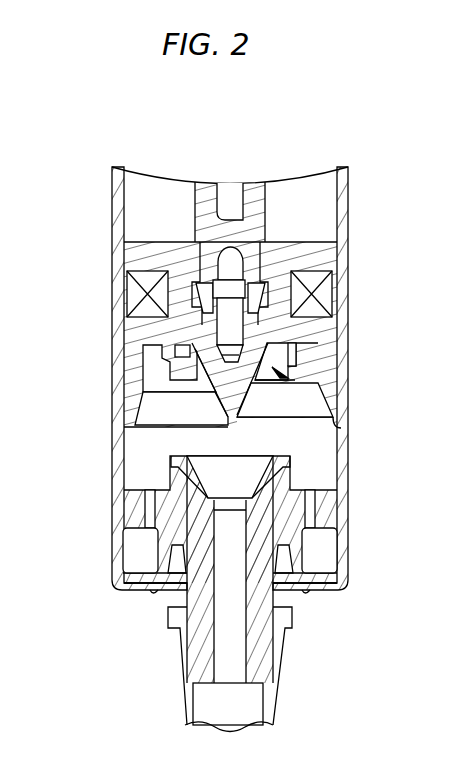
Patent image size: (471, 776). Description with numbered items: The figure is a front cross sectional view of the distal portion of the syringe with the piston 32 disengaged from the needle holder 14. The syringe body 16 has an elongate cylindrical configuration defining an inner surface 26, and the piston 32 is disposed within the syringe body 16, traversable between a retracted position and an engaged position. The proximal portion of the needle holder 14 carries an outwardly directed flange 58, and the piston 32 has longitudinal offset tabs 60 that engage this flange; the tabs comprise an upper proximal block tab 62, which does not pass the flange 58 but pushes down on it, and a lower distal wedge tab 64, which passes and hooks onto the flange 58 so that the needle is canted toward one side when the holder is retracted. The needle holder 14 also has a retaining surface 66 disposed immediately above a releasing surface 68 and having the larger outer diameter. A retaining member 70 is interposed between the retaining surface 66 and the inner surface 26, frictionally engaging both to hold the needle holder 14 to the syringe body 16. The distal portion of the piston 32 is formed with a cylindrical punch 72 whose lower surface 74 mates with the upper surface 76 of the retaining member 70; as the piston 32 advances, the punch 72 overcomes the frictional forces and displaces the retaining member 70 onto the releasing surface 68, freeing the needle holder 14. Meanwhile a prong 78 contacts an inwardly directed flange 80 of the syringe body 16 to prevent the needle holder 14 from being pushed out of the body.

The needle holder 14 is at (258, 650).
The syringe body 16 is at (340, 230).
The inner surface 26 is at (328, 550).
The piston 32 is at (315, 258).
The outwardly directed flange 58 is at (287, 458).
The longitudinal offset tabs 60 is at (102, 398).
The upper proximal block tab 62 is at (172, 346).
The lower distal wedge tab 64 is at (276, 400).
The retaining surface 66 is at (160, 485).
The releasing surface 68 is at (145, 550).
The retaining member 70 is at (150, 505).
The punch 72 is at (137, 400).
The lower surface 74 is at (336, 430).
The upper surface 76 is at (312, 490).
The prong 78 is at (349, 577).
The inwardly directed flange 80 is at (307, 588).